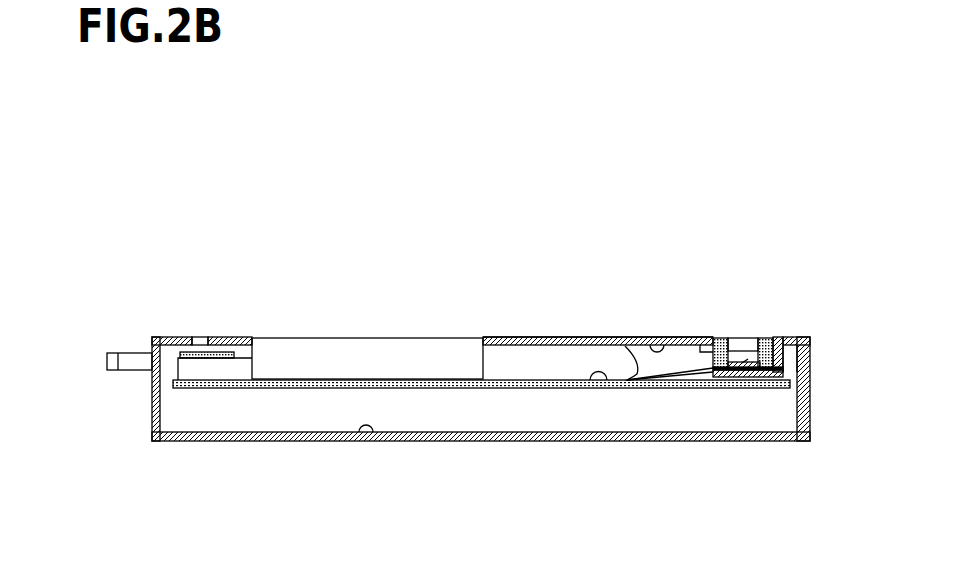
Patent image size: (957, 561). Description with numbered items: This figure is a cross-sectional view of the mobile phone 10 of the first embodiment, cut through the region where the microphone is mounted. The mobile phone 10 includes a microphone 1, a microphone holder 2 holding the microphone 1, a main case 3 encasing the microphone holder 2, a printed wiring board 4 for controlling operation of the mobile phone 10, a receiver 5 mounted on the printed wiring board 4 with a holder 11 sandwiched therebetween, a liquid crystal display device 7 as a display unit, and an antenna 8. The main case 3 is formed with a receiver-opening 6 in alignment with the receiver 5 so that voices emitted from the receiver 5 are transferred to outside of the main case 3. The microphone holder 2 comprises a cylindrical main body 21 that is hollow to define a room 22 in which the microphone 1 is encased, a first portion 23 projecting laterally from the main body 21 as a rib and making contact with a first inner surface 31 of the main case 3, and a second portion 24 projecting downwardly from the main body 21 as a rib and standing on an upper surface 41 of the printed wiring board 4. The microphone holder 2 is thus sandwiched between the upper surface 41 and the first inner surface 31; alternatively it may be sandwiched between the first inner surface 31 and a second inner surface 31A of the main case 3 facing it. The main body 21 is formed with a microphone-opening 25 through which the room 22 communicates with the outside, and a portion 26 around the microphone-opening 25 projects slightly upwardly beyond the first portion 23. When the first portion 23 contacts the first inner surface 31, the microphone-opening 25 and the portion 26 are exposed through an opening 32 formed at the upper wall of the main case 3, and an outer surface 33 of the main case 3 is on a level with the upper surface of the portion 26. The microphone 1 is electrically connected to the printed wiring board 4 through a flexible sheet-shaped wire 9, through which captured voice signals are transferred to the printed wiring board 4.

The mobile phone 10 is at (276, 208).
The main case 3 is at (523, 337).
The outer surface 33 is at (588, 337).
The receiver-opening 6 is at (198, 337).
The receiver 5 is at (209, 362).
The holder 11 is at (242, 350).
The liquid crystal display device 7 is at (367, 338).
The antenna 8 is at (130, 371).
The printed wiring board 4 is at (518, 388).
The upper surface 41 is at (585, 388).
The second inner surface 31A is at (378, 440).
The first inner surface 31 is at (645, 338).
The flexible sheet-shaped wire 9 is at (625, 346).
The first portion 23 is at (700, 349).
The portion 26 is at (728, 337).
The microphone-opening 25 is at (752, 337).
The room 22 is at (777, 337).
The opening 32 is at (786, 337).
The microphone 1 is at (735, 370).
The main body 21 is at (810, 372).
The second portion 24 is at (716, 377).
The microphone holder 2 is at (787, 360).